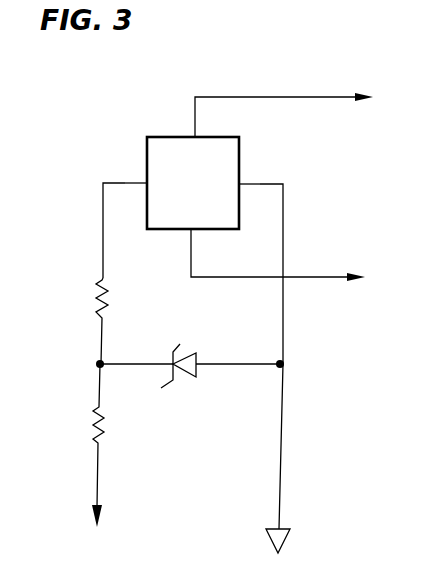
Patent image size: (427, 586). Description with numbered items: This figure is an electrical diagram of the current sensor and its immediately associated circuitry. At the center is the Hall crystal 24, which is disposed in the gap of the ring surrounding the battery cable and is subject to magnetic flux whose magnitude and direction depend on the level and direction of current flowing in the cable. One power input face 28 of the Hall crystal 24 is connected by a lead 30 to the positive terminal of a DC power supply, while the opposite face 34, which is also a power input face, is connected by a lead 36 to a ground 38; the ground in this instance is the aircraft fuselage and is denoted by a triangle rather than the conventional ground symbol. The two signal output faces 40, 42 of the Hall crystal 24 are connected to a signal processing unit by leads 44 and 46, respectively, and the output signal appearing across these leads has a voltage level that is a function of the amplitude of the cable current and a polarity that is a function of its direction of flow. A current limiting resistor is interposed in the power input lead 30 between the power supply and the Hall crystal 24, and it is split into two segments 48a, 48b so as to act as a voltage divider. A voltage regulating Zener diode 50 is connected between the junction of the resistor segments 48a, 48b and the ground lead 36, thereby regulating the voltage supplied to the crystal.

The Hall crystal 24 is at (233, 170).
The power input face 28 is at (147, 203).
The lead 30 is at (121, 182).
The opposite face 34 is at (240, 196).
The lead 36 is at (284, 229).
The ground 38 is at (290, 538).
The signal output face 40 is at (177, 136).
The signal output face 42 is at (170, 233).
The lead 44 is at (251, 97).
The lead 46 is at (320, 277).
The resistor segment 48a is at (108, 296).
The resistor segment 48b is at (104, 422).
The Zener diode 50 is at (187, 361).